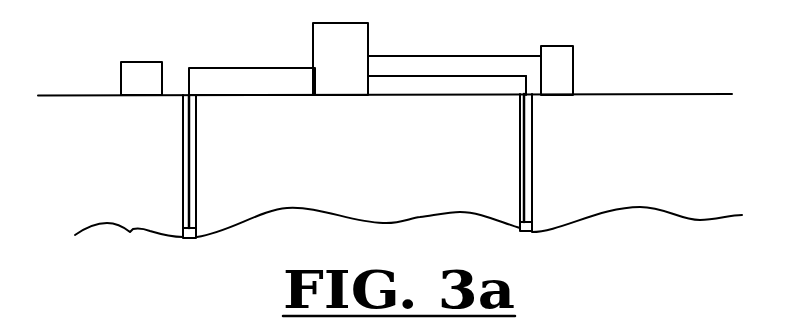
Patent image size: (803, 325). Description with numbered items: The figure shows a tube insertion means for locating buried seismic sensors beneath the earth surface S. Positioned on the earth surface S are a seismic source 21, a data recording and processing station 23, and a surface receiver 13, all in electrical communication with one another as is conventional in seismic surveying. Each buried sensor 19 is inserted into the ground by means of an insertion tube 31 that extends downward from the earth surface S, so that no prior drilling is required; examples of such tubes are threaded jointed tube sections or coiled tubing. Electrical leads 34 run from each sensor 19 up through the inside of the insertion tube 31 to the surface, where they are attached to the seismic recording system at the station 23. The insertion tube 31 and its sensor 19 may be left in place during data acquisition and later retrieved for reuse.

The surface receiver 13 is at (574, 57).
The buried sensor 19 is at (182, 232).
The seismic source 21 is at (140, 62).
The data recording and processing station 23 is at (368, 33).
The insertion tube 31 is at (197, 158).
The electrical leads 34 is at (260, 68).
The earth surface S is at (395, 96).